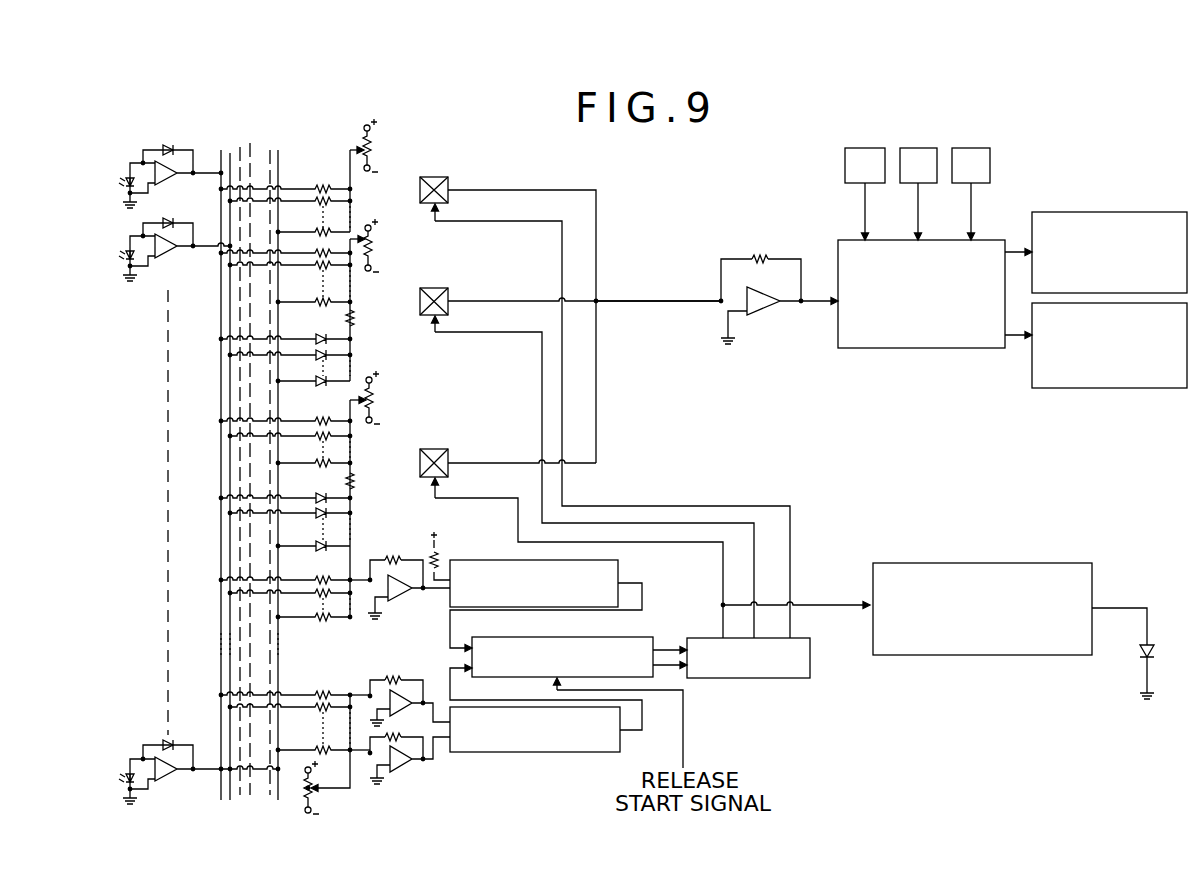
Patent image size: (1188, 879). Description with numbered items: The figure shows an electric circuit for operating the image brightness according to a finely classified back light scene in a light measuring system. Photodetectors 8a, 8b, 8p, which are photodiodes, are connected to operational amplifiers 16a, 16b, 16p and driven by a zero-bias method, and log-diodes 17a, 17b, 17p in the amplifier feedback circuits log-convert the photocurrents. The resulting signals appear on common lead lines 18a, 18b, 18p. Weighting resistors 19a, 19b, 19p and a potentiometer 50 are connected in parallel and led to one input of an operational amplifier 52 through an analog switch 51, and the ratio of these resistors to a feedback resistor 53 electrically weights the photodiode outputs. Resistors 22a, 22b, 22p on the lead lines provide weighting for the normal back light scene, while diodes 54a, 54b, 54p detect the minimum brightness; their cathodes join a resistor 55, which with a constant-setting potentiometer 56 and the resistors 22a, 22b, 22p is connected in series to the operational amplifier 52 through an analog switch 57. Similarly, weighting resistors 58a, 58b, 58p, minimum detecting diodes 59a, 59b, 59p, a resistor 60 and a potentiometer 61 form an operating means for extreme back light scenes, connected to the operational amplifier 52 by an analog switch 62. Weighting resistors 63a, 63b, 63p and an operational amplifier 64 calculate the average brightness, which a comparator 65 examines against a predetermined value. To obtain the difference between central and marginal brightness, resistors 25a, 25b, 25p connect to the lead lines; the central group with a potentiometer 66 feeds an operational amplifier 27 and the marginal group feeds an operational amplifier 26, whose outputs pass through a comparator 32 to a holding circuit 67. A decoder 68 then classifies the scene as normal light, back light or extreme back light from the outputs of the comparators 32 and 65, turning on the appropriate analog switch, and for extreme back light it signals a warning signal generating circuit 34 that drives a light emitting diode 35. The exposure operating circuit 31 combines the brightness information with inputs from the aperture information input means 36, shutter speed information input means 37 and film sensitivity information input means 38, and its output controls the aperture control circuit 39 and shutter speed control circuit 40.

The photodetector 8a is at (125, 182).
The photodetector 8b is at (125, 263).
The photodetector 8p is at (125, 781).
The operational amplifier 16a is at (166, 183).
The operational amplifier 16b is at (166, 260).
The operational amplifier 16p is at (170, 782).
The log-diode 17a is at (166, 145).
The log-diode 17b is at (162, 220).
The log-diode 17p is at (172, 745).
The common lead line 18a is at (218, 150).
The common lead line 18b is at (244, 150).
The common lead line 18p is at (286, 150).
The weighting resistor 19a is at (318, 185).
The weighting resistor 19b is at (324, 205).
The weighting resistor 19p is at (328, 228).
The potentiometer 50 is at (377, 150).
The analog switch 51 is at (435, 177).
The weighting resistor 22a is at (333, 256).
The weighting resistor 22b is at (331, 268).
The weighting resistor 22p is at (314, 316).
The potentiometer 56 is at (376, 246).
The resistor 55 is at (360, 318).
The analog switch 57 is at (448, 288).
The diode 54a is at (334, 339).
The diode 54b is at (331, 355).
The diode 54p is at (314, 384).
The potentiometer 61 is at (378, 404).
The weighting resistor 58a is at (331, 422).
The weighting resistor 58b is at (290, 436).
The weighting resistor 58p is at (314, 477).
The analog switch 62 is at (443, 449).
The resistor 60 is at (355, 482).
The minimum detecting diode 59a is at (323, 499).
The minimum detecting diode 59b is at (290, 513).
The minimum detecting diode 59p is at (327, 546).
The weighting resistor 63a is at (322, 578).
The weighting resistor 63b is at (290, 593).
The weighting resistor 63p is at (324, 620).
The operational amplifier 64 is at (402, 596).
The comparator 65 is at (472, 557).
The resistor 25a is at (322, 690).
The resistor 25b is at (320, 712).
The resistor 25p is at (292, 808).
The operational amplifier 26 is at (406, 706).
The operational amplifier 27 is at (406, 766).
The comparator 32 is at (560, 754).
The potentiometer 66 is at (251, 809).
The holding circuit 67 is at (650, 636).
The decoder 68 is at (780, 678).
The warning signal generating circuit 34 is at (1058, 562).
The light emitting diode 35 is at (1138, 654).
The operational amplifier 52 is at (764, 314).
The feedback resistor 53 is at (760, 254).
The exposure operating circuit 31 is at (954, 348).
The aperture information input means 36 is at (864, 147).
The shutter speed information input means 37 is at (920, 148).
The film sensitivity information input means 38 is at (985, 148).
The aperture control circuit 39 is at (1154, 212).
The shutter speed control circuit 40 is at (1135, 388).